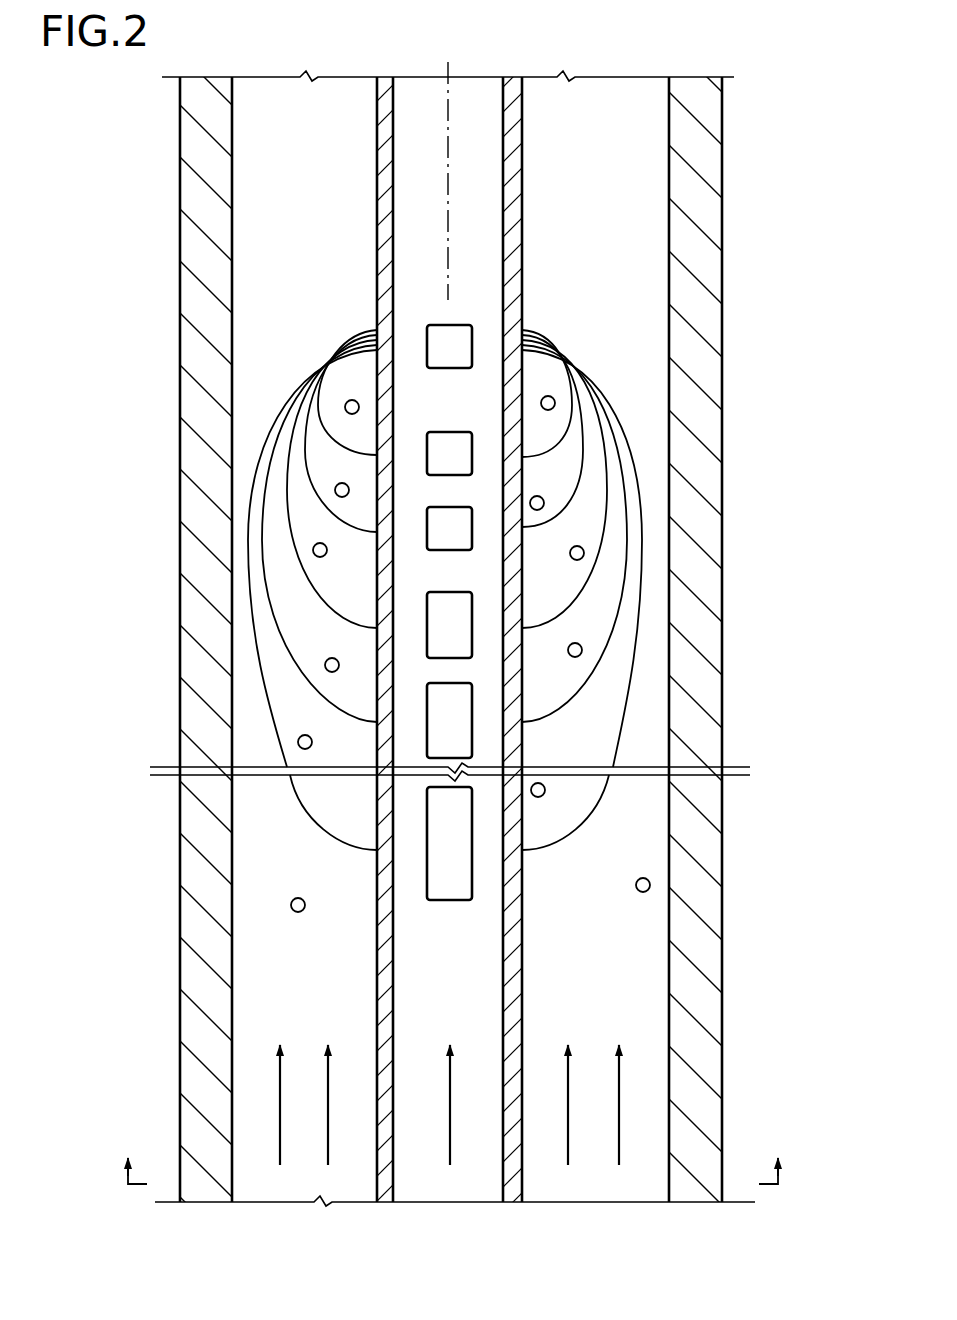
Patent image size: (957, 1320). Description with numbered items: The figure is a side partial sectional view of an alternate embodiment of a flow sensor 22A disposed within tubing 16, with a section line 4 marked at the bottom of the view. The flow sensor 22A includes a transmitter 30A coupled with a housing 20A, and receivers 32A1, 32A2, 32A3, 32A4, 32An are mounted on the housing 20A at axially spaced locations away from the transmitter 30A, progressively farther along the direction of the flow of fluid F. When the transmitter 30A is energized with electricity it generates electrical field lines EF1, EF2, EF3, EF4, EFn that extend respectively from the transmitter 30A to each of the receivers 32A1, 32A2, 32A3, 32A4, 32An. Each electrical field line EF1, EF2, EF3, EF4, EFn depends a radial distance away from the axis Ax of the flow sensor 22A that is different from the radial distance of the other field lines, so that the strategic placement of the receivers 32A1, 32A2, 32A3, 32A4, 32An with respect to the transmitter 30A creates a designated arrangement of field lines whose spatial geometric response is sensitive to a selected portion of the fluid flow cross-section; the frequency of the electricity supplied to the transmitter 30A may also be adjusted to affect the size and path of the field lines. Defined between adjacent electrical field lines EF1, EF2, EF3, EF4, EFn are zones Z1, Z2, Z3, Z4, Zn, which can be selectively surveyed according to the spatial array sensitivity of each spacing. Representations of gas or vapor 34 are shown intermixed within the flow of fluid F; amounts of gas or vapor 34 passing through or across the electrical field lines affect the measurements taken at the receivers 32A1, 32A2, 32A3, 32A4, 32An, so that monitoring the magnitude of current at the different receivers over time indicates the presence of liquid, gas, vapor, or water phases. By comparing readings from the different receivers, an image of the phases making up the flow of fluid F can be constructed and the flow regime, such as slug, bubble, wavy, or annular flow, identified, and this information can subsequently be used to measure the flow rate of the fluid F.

The tubing 16 is at (723, 346).
The transmitter 30A is at (470, 306).
The flow sensor 22A is at (349, 288).
The housing 20A is at (525, 975).
The axis Ax is at (450, 98).
The receiver 32A1 is at (476, 450).
The receiver 32A2 is at (476, 535).
The receiver 32A3 is at (476, 620).
The receiver 32A4 is at (476, 707).
The receiver 32An is at (476, 833).
The electrical field line EF1 is at (335, 350).
The electrical field line EF2 is at (307, 400).
The electrical field line EF3 is at (287, 452).
The electrical field line EF4 is at (264, 505).
The electrical field line EFn is at (250, 563).
The zone Z1 is at (370, 444).
The zone Z2 is at (348, 479).
The zone Z3 is at (362, 589).
The zone Z4 is at (362, 704).
The zone Zn is at (358, 816).
The gas or vapor 34 is at (286, 906).
The fluid F is at (630, 1080).
The section line 4 is at (450, 1154).